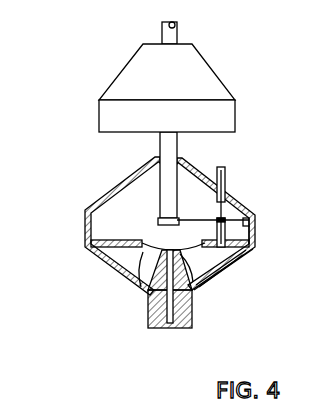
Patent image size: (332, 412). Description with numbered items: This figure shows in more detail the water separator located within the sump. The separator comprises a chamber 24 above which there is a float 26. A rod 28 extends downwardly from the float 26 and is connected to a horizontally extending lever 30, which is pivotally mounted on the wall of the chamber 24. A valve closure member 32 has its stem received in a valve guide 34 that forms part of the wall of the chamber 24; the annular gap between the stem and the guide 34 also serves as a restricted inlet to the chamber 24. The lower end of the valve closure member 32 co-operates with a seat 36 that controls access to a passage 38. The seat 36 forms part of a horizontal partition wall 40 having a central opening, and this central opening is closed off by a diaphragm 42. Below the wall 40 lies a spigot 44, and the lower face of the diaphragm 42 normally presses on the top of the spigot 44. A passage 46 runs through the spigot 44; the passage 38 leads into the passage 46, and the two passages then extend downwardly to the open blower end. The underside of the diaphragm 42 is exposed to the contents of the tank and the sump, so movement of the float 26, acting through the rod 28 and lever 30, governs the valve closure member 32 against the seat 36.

The chamber 24 is at (118, 214).
The float 26 is at (213, 67).
The rod 28 is at (160, 150).
The lever 30 is at (198, 218).
The valve closure member 32 is at (250, 240).
The valve guide 34 is at (227, 185).
The seat 36 is at (237, 256).
The passage 38 is at (216, 268).
The horizontal partition wall 40 is at (112, 255).
The diaphragm 42 is at (140, 287).
The spigot 44 is at (195, 287).
The passage 46 is at (166, 324).